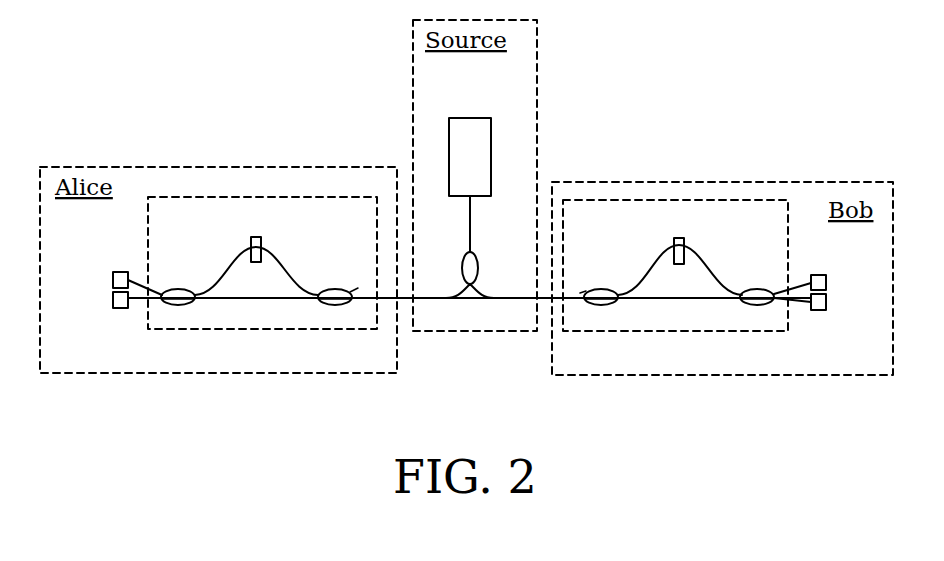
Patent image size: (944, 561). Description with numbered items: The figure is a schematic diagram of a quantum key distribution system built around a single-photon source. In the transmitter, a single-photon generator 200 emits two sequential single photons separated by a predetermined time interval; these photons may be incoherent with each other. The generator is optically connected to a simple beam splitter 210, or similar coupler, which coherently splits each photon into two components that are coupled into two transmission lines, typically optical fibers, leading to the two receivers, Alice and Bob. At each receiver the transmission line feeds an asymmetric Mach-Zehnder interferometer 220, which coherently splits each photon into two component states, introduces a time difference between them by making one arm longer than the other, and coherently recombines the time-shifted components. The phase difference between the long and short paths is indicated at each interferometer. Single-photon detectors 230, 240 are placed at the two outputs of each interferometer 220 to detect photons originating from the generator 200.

The single-photon generator 200 is at (462, 118).
The beam splitter 210 is at (478, 254).
The asymmetric Mach-Zehnder interferometer 220 is at (292, 330).
The single-photon detector 230 is at (120, 272).
The single-photon detector 240 is at (120, 308).